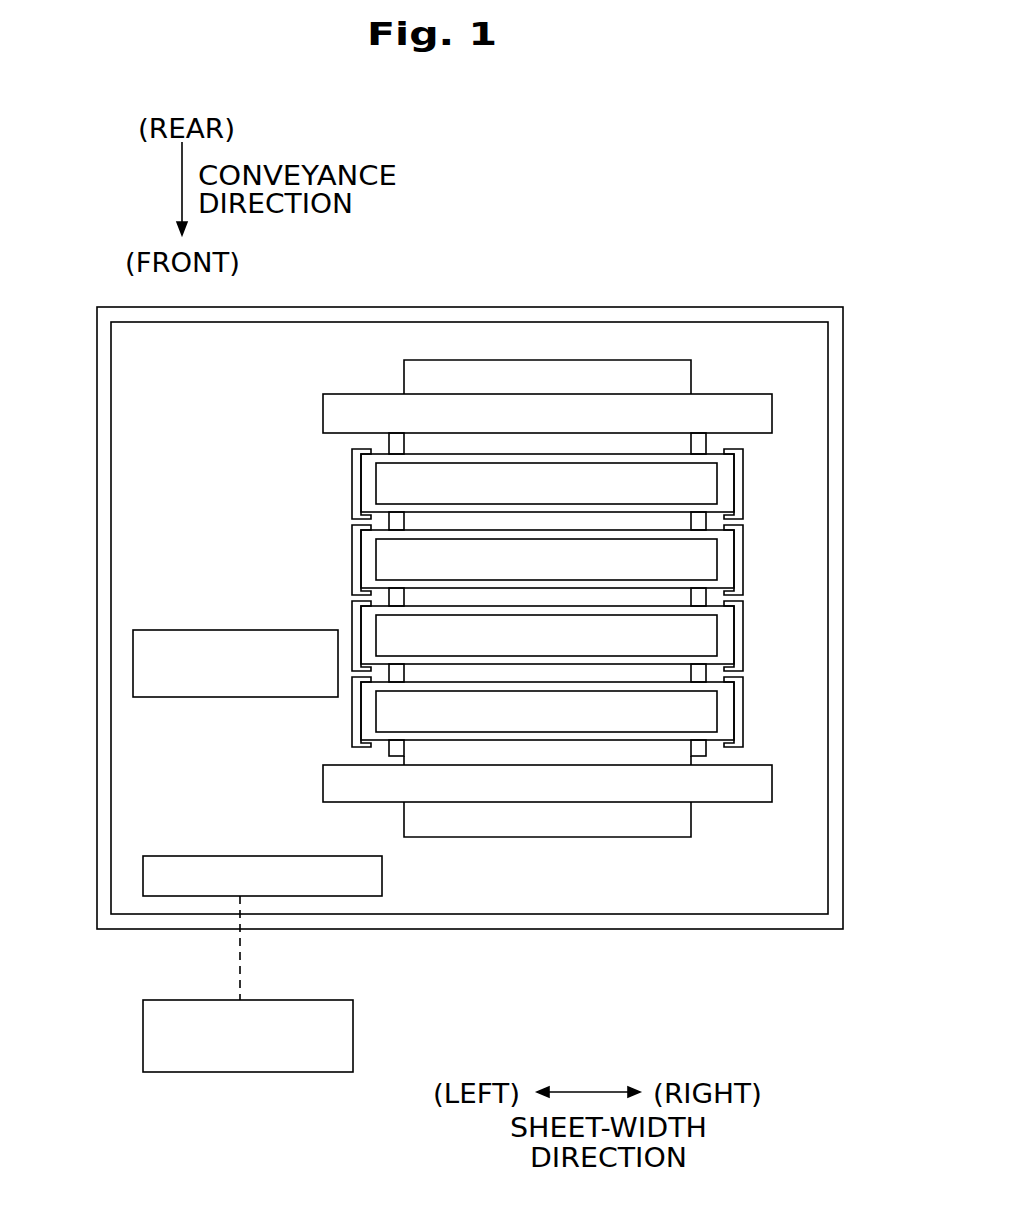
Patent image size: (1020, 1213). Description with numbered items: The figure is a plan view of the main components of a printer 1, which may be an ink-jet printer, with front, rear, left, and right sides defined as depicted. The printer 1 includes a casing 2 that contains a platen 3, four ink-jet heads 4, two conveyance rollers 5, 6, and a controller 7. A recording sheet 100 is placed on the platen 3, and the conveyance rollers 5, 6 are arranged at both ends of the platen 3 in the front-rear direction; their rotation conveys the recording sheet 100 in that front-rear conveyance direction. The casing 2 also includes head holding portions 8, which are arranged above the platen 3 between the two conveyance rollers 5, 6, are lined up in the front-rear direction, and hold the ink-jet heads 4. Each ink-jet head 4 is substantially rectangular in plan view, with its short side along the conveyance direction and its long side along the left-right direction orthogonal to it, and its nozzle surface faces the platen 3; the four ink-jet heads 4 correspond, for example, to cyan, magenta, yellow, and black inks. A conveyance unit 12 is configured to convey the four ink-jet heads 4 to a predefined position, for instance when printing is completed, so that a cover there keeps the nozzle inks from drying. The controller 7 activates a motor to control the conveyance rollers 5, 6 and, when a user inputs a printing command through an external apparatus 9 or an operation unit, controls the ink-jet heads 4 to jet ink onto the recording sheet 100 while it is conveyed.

The printer 1 is at (760, 280).
The casing 2 is at (770, 929).
The platen 3 is at (389, 447).
The ink-jet head 4 is at (713, 453).
The conveyance roller 5 is at (743, 393).
The conveyance roller 6 is at (722, 802).
The controller 7 is at (195, 856).
The head holding portion 8 is at (361, 565).
The external apparatus 9 is at (227, 1072).
The conveyance unit 12 is at (133, 662).
The recording sheet 100 is at (690, 380).